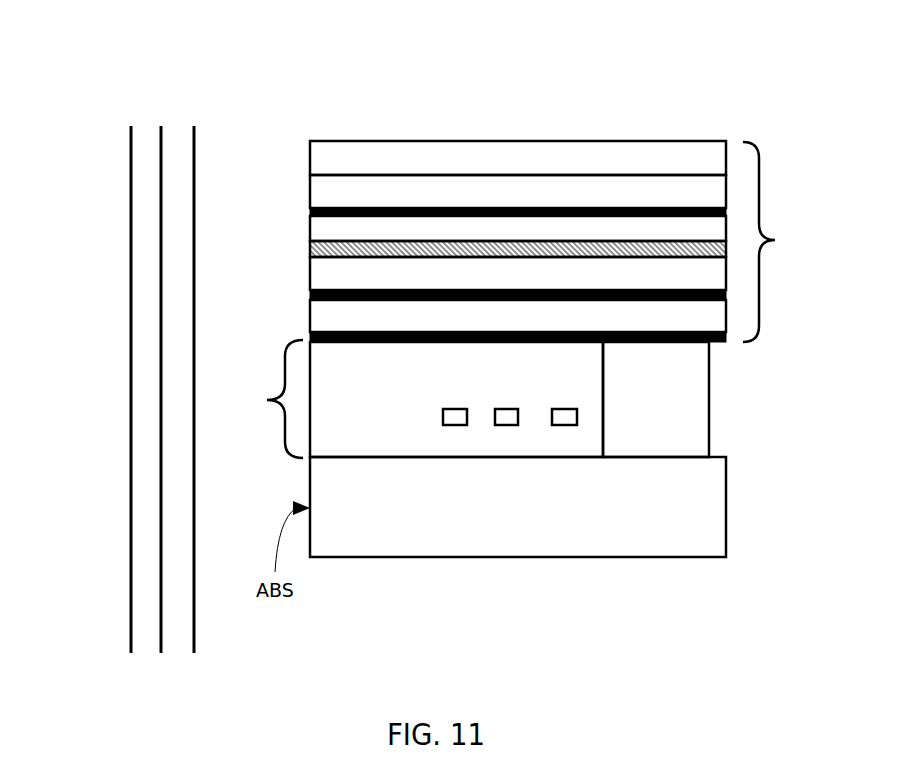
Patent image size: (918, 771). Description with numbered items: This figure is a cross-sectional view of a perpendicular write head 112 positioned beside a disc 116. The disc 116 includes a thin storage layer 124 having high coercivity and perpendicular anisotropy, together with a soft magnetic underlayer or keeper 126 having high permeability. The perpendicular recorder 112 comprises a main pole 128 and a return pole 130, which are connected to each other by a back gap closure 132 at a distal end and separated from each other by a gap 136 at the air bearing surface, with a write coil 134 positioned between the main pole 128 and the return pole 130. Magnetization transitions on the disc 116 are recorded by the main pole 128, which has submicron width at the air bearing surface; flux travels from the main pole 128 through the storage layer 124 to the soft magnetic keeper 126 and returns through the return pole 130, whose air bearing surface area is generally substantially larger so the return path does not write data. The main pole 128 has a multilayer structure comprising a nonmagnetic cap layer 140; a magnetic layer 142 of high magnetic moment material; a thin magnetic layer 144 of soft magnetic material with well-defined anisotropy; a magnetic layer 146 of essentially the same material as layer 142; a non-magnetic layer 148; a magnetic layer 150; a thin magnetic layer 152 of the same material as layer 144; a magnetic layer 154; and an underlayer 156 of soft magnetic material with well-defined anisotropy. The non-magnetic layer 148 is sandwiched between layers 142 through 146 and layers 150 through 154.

The perpendicular write head 112 is at (669, 78).
The disc 116 is at (157, 78).
The storage layer 124 is at (176, 158).
The soft magnetic underlayer 126 is at (145, 158).
The main pole 128 is at (765, 235).
The return pole 130 is at (726, 498).
The back gap closure 132 is at (709, 415).
The write coil 134 is at (565, 407).
The gap 136 is at (277, 373).
The cap layer 140 is at (726, 160).
The magnetic layer 142 is at (726, 190).
The thin magnetic layer 144 is at (310, 211).
The magnetic layer 146 is at (310, 221).
The non-magnetic layer 148 is at (310, 244).
The magnetic layer 150 is at (726, 275).
The thin magnetic layer 152 is at (310, 291).
The magnetic layer 154 is at (726, 305).
The underlayer 156 is at (726, 330).